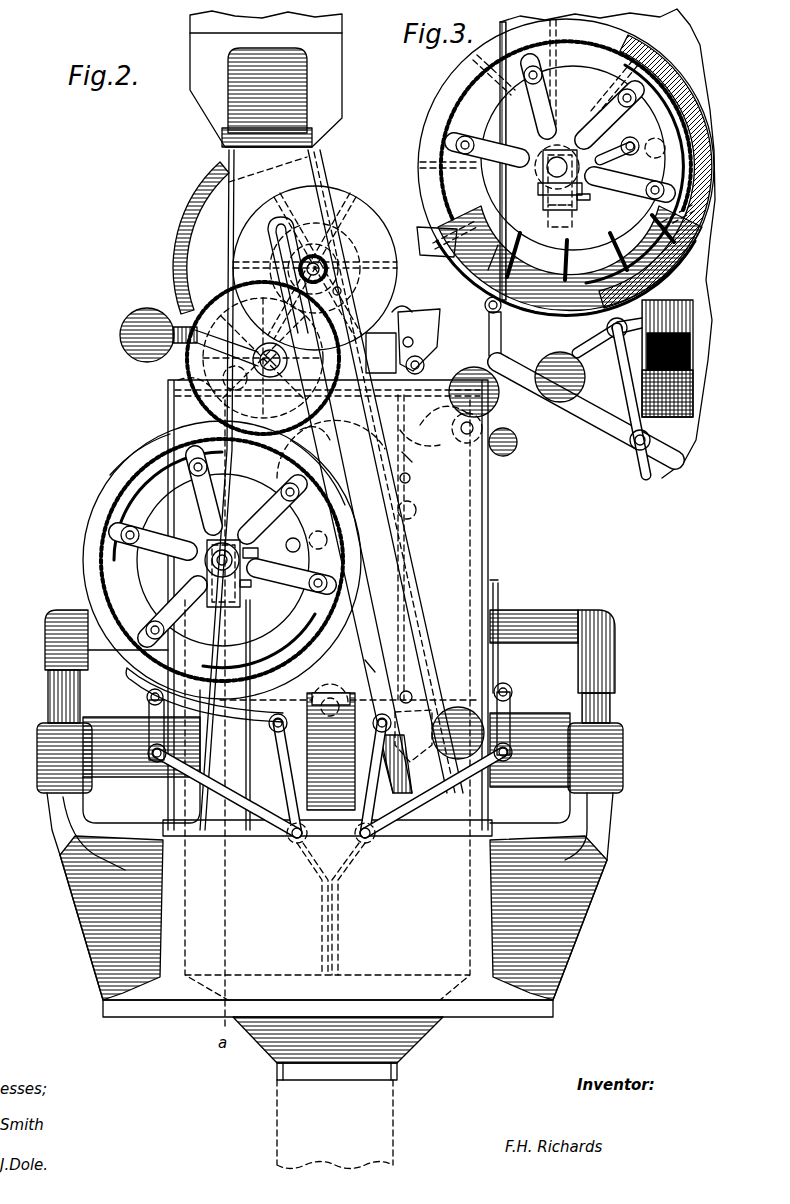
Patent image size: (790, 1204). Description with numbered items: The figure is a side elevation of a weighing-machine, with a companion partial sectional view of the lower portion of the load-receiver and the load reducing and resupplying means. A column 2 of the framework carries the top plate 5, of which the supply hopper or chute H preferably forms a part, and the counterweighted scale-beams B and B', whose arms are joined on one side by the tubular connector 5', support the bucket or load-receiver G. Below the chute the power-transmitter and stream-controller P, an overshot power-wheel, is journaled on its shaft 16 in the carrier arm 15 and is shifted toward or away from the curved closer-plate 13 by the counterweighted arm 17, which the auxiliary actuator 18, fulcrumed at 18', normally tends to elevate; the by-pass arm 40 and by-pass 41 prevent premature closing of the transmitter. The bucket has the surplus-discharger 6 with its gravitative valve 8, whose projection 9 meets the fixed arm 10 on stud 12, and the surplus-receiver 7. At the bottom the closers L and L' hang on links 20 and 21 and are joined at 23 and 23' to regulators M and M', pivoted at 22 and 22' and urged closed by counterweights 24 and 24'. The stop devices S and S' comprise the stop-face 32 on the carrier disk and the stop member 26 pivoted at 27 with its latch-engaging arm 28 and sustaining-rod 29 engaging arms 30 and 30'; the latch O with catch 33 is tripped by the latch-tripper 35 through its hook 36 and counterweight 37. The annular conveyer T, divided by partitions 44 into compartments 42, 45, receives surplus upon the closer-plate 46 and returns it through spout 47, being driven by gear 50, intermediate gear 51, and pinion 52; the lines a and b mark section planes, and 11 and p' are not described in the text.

In FIG. 2, the end frame or column 2 is at (410, 578).
In FIG. 2, the top plate 5 is at (293, 87).
In FIG. 2, the tubular shaft or connector 5' is at (530, 757).
In FIG. 2, the surplus-discharger conduit 6 is at (215, 606).
In FIG. 3, the surplus-discharger conduit 6 is at (560, 155).
In FIG. 2, the surplus-receiver conduit 7 is at (307, 782).
In FIG. 3, the surplus-receiver conduit 7 is at (677, 398).
In FIG. 2, the gravitative valve 8 is at (242, 612).
In FIG. 3, the gravitative valve 8 is at (543, 197).
In FIG. 2, the projection 9 is at (252, 587).
In FIG. 3, the projection 9 is at (590, 197).
In FIG. 2, the fixed arm 10 is at (258, 555).
In FIG. 2, the pinion 11 is at (236, 391).
In FIG. 2, the stud 12 is at (205, 561).
In FIG. 2, the curved depending closer-plate 13 is at (180, 222).
In FIG. 2, the outwardly-extending arm 15 is at (340, 291).
In FIG. 2, the shaft of the power-wheel 16 is at (328, 262).
In FIG. 2, the counterweighted arm 17 is at (150, 320).
In FIG. 2, the auxiliary actuator 18 is at (474, 382).
In FIG. 2, the fulcrum 18' is at (329, 434).
In FIG. 2, the link 20 is at (165, 722).
In FIG. 3, the link 20 is at (489, 328).
In FIG. 2, the link 21 is at (496, 704).
In FIG. 2, the pivot 22 is at (261, 773).
In FIG. 3, the pivot 22 is at (608, 335).
In FIG. 2, the pivot 22' is at (400, 771).
In FIG. 2, the pivotal connection 23 is at (279, 844).
In FIG. 3, the pivotal connection 23 is at (622, 454).
In FIG. 2, the pivotal connection 23' is at (380, 844).
In FIG. 2, the counterweighted actuator 24 is at (174, 751).
In FIG. 3, the counterweighted actuator 24 is at (551, 371).
In FIG. 2, the counterweighted actuator 24' is at (458, 708).
In FIG. 2, the stop member 26 is at (430, 314).
In FIG. 2, the pivot 27 is at (425, 362).
In FIG. 2, the latch-engaging arm 28 is at (420, 425).
In FIG. 2, the closer-sustaining rod 29 is at (406, 538).
In FIG. 2, the inwardly-extending arm 30 is at (298, 740).
In FIG. 2, the inwardly-extending arm 30' is at (411, 682).
In FIG. 2, the stop-face 32 is at (400, 312).
In FIG. 2, the catch 33 is at (425, 446).
In FIG. 2, the by-pass latch-tripper 35 is at (410, 480).
In FIG. 2, the hook or projection 36 is at (412, 462).
In FIG. 2, the counterweight 37 is at (416, 512).
In FIG. 2, the depending by-pass arm 40 is at (318, 447).
In FIG. 2, the by-pass 41 is at (296, 540).
In FIG. 3, the by-pass 41 is at (621, 149).
In FIG. 2, the compartment 42 is at (205, 500).
In FIG. 3, the compartment 42 is at (585, 88).
In FIG. 2, the partition 44 is at (150, 437).
In FIG. 3, the partition 44 is at (598, 256).
In FIG. 3, the compartment 45 is at (518, 256).
In FIG. 2, the curved closer-plate 46 is at (140, 680).
In FIG. 3, the curved closer-plate 46 is at (505, 312).
In FIG. 2, the discharge spout or chute 47 is at (376, 668).
In FIG. 3, the discharge spout or chute 47 is at (694, 297).
In FIG. 2, the gear 50 is at (100, 575).
In FIG. 3, the gear 50 is at (442, 152).
In FIG. 2, the intermediate gear 51 is at (196, 402).
In FIG. 2, the pinion 52 is at (310, 244).
In FIG. 2, the supply hopper or chute H is at (205, 98).
In FIG. 2, the load-receiver or bucket G is at (488, 502).
In FIG. 3, the load-receiver or bucket G is at (680, 38).
In FIG. 2, the annular conveyer or transferring-receiver T is at (106, 476).
In FIG. 3, the annular conveyer or transferring-receiver T is at (428, 112).
In FIG. 2, the power-transmitter and stream-controller P is at (315, 268).
In FIG. 2, the scale-beam B is at (131, 760).
In FIG. 2, the scale-beam B' is at (327, 735).
In FIG. 2, the closer or closer-plate L is at (227, 793).
In FIG. 3, the closer or closer-plate L is at (586, 411).
In FIG. 2, the closer or closer-plate L' is at (438, 788).
In FIG. 2, the regulator M is at (305, 909).
In FIG. 3, the regulator M is at (628, 413).
In FIG. 2, the regulator M' is at (354, 909).
In FIG. 2, the counterweighted latch O is at (510, 442).
In FIG. 2, the stop device S is at (377, 353).
In FIG. 2, the stop device S' is at (428, 334).
In FIG. 2, the section line a is at (193, 377).
In FIG. 2, the section line b is at (330, 774).
In FIG. 2, the arm p' is at (303, 505).